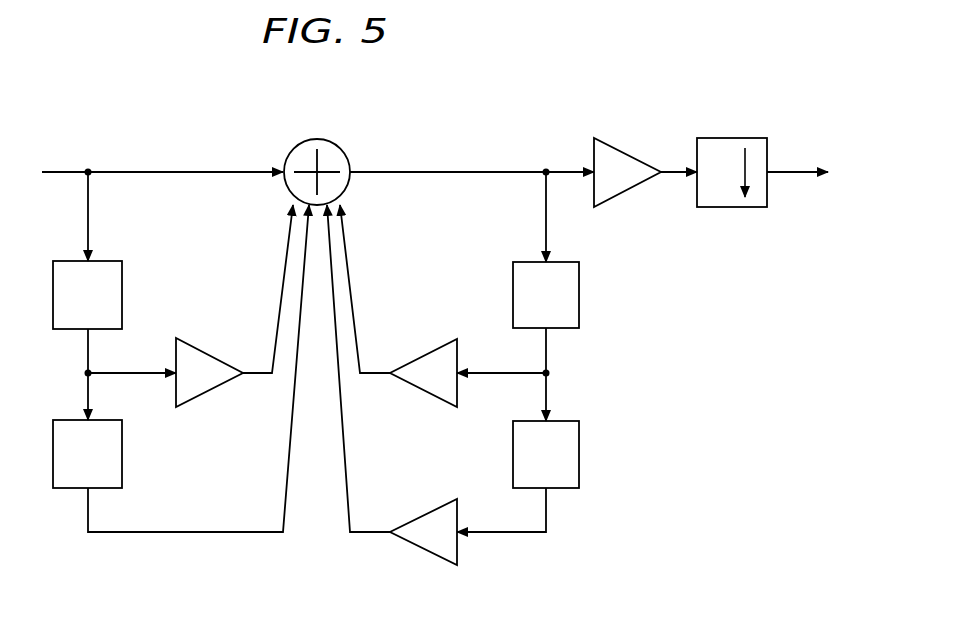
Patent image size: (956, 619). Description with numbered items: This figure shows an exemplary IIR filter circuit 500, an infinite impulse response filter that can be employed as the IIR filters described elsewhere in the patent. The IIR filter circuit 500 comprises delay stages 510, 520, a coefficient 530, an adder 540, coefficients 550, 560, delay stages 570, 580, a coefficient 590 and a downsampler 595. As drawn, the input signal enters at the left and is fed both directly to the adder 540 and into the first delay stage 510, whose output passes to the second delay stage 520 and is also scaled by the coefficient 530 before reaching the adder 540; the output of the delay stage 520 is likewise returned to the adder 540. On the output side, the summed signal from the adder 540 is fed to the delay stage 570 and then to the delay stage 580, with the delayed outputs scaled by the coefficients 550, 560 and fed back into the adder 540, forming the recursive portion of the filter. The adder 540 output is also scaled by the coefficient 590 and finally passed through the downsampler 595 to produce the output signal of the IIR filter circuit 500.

The IIR filter circuit 500 is at (146, 108).
The delay stage 510 is at (101, 261).
The delay stage 520 is at (101, 420).
The coefficient 530 is at (214, 350).
The adder 540 is at (321, 141).
The coefficient 550 is at (422, 357).
The coefficient 560 is at (422, 517).
The delay stage 570 is at (562, 262).
The delay stage 580 is at (562, 421).
The coefficient 590 is at (631, 153).
The downsampler 595 is at (726, 138).